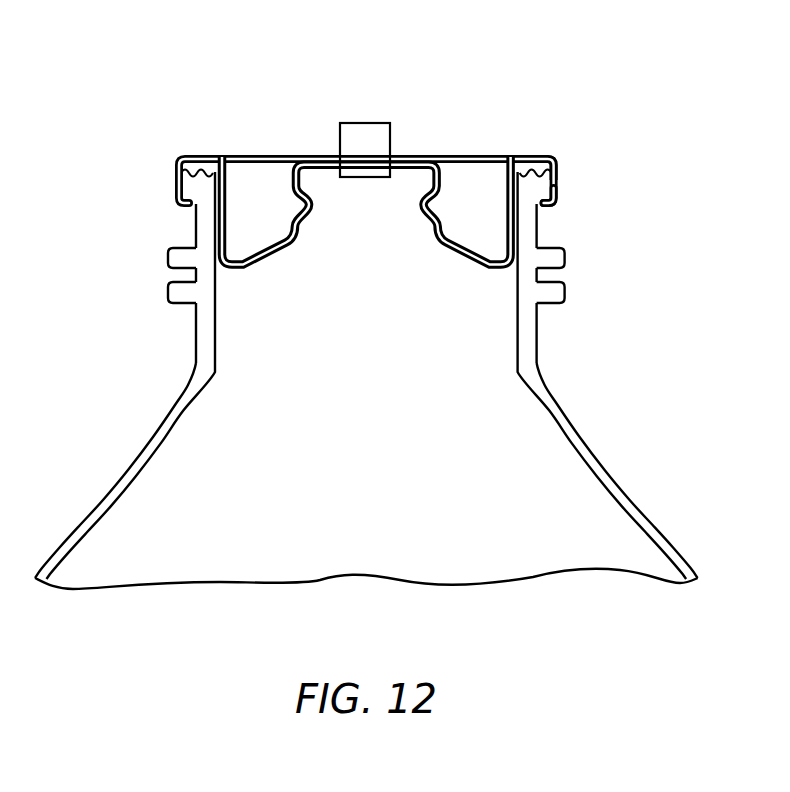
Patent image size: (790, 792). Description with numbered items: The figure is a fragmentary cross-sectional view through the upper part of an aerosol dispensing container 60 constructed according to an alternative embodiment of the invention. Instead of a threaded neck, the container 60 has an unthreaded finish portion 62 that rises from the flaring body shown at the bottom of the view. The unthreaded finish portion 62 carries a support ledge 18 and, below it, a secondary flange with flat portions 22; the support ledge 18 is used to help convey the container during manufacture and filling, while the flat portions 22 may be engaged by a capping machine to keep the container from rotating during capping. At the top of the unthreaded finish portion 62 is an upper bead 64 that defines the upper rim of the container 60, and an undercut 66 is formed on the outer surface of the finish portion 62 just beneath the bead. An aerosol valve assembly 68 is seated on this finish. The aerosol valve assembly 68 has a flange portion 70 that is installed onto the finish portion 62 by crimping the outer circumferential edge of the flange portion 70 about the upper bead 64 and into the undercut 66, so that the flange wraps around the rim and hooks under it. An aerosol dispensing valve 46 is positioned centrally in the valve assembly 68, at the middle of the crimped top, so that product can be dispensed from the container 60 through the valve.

The support ledge 18 is at (567, 260).
The flat portion 22 is at (567, 297).
The aerosol dispensing valve 46 is at (360, 123).
The aerosol dispensing container 60 is at (425, 146).
The unthreaded finish portion 62 is at (354, 242).
The upper bead 64 is at (195, 188).
The undercut 66 is at (545, 207).
The aerosol valve assembly 68 is at (471, 148).
The flange portion 70 is at (553, 157).